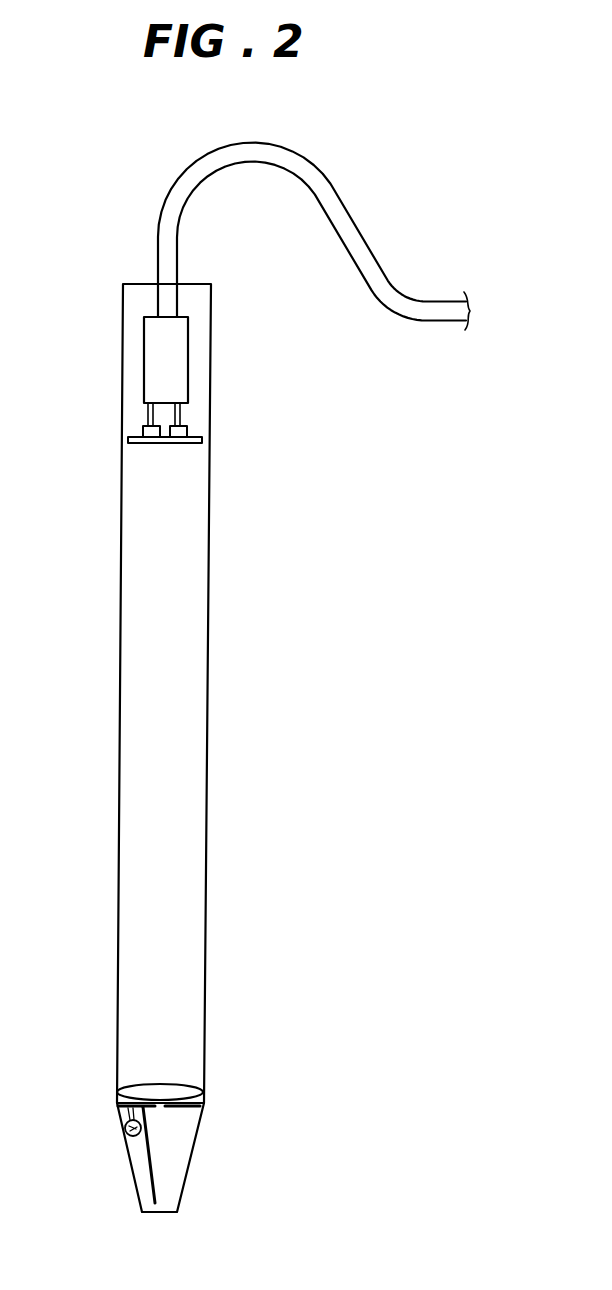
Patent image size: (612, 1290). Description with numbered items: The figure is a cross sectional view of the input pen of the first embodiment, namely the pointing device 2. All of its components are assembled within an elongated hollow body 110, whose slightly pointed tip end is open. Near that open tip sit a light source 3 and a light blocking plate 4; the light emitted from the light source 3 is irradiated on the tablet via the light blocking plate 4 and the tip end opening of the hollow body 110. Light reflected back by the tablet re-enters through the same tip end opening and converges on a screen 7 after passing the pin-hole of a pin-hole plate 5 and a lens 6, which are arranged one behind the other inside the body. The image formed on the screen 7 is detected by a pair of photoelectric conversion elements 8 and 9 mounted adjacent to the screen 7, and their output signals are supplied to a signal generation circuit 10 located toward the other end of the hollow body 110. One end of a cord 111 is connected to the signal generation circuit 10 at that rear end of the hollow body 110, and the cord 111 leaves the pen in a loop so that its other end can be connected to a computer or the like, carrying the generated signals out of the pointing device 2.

The pointing device 2 is at (463, 159).
The hollow body 110 is at (212, 762).
The cord 111 is at (413, 322).
The signal generation circuit 10 is at (148, 352).
The photoelectric conversion element 8 is at (143, 429).
The photoelectric conversion element 9 is at (187, 428).
The screen 7 is at (202, 440).
The lens 6 is at (185, 1087).
The pin-hole plate 5 is at (183, 1108).
The light blocking plate 4 is at (143, 1172).
The light source 3 is at (127, 1142).